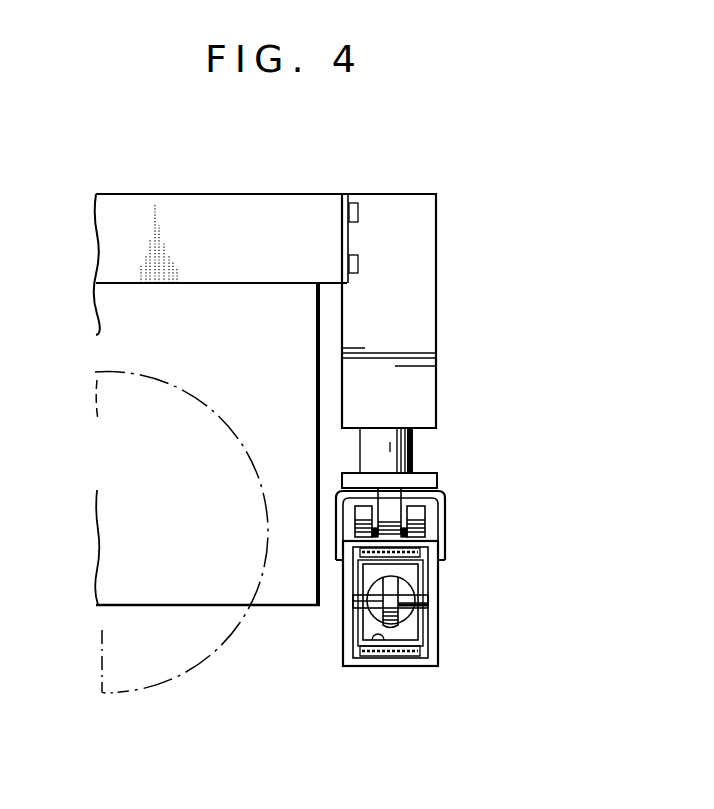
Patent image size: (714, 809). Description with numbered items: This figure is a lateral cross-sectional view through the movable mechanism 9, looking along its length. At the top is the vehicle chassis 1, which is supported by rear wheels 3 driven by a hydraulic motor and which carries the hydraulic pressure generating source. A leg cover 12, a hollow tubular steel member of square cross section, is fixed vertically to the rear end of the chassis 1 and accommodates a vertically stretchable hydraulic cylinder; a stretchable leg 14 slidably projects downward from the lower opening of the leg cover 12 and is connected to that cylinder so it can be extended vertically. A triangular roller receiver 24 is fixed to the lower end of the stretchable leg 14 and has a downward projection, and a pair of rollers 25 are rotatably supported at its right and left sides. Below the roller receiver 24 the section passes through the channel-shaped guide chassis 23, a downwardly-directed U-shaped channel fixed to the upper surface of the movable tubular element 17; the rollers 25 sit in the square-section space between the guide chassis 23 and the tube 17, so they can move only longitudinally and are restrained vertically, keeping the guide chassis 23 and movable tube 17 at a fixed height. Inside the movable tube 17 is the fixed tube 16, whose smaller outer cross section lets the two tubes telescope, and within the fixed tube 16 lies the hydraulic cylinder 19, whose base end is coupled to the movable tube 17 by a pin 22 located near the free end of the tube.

The vehicle chassis 1 is at (237, 205).
The rear wheels 3 is at (125, 697).
The movable mechanism 9 is at (452, 298).
The leg cover 12 is at (436, 214).
The stretchable leg 14 is at (400, 445).
The fixed tube 16 is at (378, 641).
The movable tubular element 17 is at (436, 658).
The hydraulic cylinder 19 is at (419, 622).
The pin 22 is at (404, 603).
The channel-shaped guide chassis 23 is at (438, 507).
The triangular roller receiver 24 is at (388, 497).
The rollers 25 is at (417, 518).